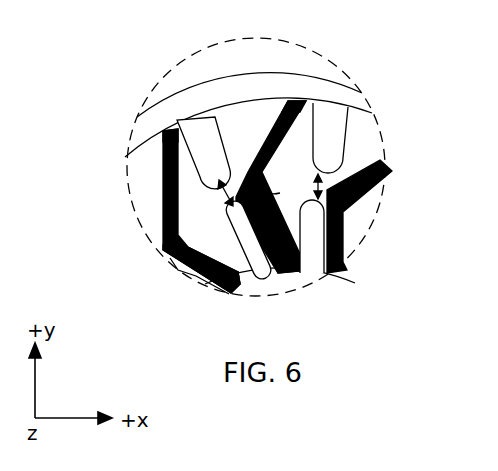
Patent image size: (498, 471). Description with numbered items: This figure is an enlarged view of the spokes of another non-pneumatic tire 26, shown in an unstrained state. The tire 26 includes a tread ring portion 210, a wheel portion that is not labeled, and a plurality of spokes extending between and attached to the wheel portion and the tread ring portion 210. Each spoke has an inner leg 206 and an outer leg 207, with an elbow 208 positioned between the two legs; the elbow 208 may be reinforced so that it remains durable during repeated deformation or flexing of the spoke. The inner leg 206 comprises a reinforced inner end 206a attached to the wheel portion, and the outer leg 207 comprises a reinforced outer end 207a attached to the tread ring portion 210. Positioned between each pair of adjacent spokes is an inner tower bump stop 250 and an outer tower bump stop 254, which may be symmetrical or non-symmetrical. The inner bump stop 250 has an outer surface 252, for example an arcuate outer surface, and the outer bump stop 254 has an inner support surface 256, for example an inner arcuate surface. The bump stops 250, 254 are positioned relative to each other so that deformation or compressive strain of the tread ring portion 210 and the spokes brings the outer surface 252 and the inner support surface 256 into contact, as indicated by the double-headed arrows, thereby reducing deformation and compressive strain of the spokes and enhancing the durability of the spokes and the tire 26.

The non-pneumatic tire 26 is at (354, 41).
The tread ring portion 210 is at (360, 101).
The outer leg 207 is at (284, 135).
The reinforced outer end 207a is at (165, 128).
The inner leg 206 is at (198, 275).
The reinforced inner end 206a is at (236, 283).
The inner tower bump stop 250 is at (260, 270).
The outer tower bump stop 254 is at (202, 130).
The outer surface 252 is at (228, 207).
The inner support surface 256 is at (218, 186).
The elbow 208 is at (128, 233).